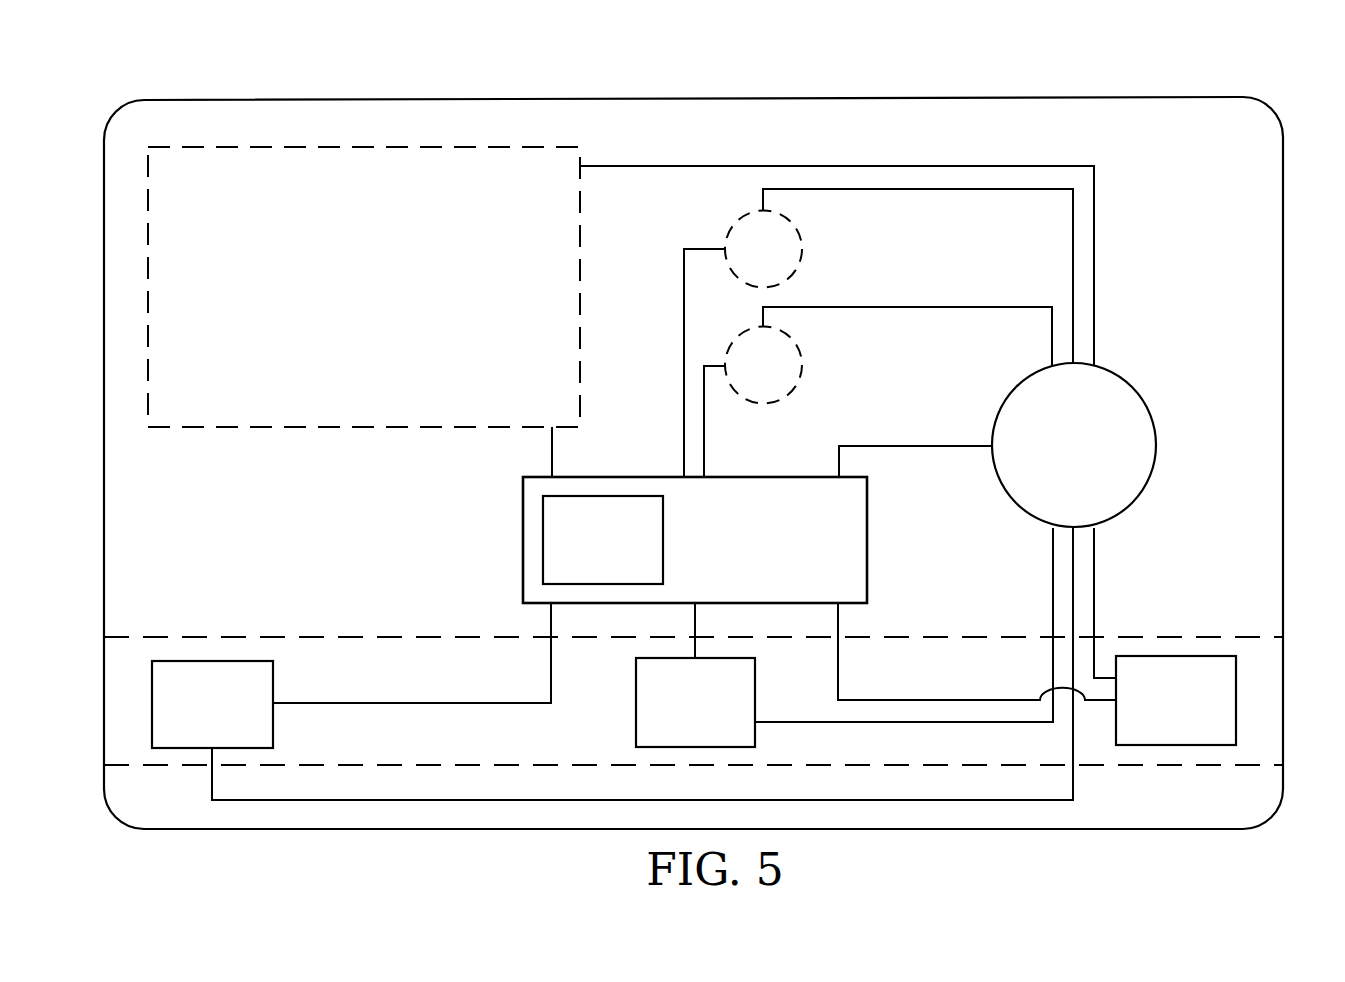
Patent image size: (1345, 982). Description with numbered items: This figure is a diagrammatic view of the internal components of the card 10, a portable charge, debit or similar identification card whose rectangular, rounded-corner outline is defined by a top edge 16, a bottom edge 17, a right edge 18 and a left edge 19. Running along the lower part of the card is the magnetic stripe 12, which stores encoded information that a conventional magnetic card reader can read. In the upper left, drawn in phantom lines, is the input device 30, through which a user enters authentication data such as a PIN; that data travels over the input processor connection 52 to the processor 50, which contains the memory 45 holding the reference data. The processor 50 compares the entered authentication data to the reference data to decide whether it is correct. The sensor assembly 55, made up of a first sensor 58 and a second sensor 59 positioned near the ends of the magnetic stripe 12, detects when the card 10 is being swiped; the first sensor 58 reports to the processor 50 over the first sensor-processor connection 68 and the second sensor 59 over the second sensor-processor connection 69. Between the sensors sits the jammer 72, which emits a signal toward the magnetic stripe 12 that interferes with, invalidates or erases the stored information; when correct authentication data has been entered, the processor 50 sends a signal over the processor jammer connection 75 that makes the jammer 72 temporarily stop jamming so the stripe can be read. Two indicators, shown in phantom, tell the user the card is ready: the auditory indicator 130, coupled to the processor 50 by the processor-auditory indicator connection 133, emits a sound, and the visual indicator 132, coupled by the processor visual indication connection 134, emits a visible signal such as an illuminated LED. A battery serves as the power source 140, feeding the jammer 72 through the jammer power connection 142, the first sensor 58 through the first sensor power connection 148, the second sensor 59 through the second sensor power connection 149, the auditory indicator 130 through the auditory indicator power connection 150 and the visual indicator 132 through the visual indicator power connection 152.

The card 10 is at (690, 452).
The magnetic stripe 12 is at (367, 680).
The top edge 16 is at (780, 98).
The bottom edge 17 is at (488, 832).
The right edge 18 is at (1283, 513).
The left edge 19 is at (104, 509).
The input device 30 is at (268, 147).
The memory 45 is at (586, 554).
The processor 50 is at (748, 554).
The input processor connection 52 is at (551, 450).
The sensor assembly 55 is at (696, 702).
The first sensor 58 is at (1160, 716).
The second sensor 59 is at (196, 721).
The first sensor-processor connection 68 is at (839, 620).
The second sensor-processor connection 69 is at (551, 620).
The jammer 72 is at (680, 718).
The processor jammer connection 75 is at (696, 615).
The auditory indicator 130 is at (765, 243).
The visual indicator 132 is at (765, 372).
The processor-auditory indicator connection 133 is at (684, 332).
The processor visual indication connection 134 is at (704, 443).
The power source 140 is at (1052, 460).
The jammer power connection 142 is at (1053, 586).
The first sensor power connection 148 is at (1094, 598).
The second sensor power connection 149 is at (1073, 570).
The auditory indicator power connection 150 is at (966, 190).
The visual indicator power connection 152 is at (901, 307).